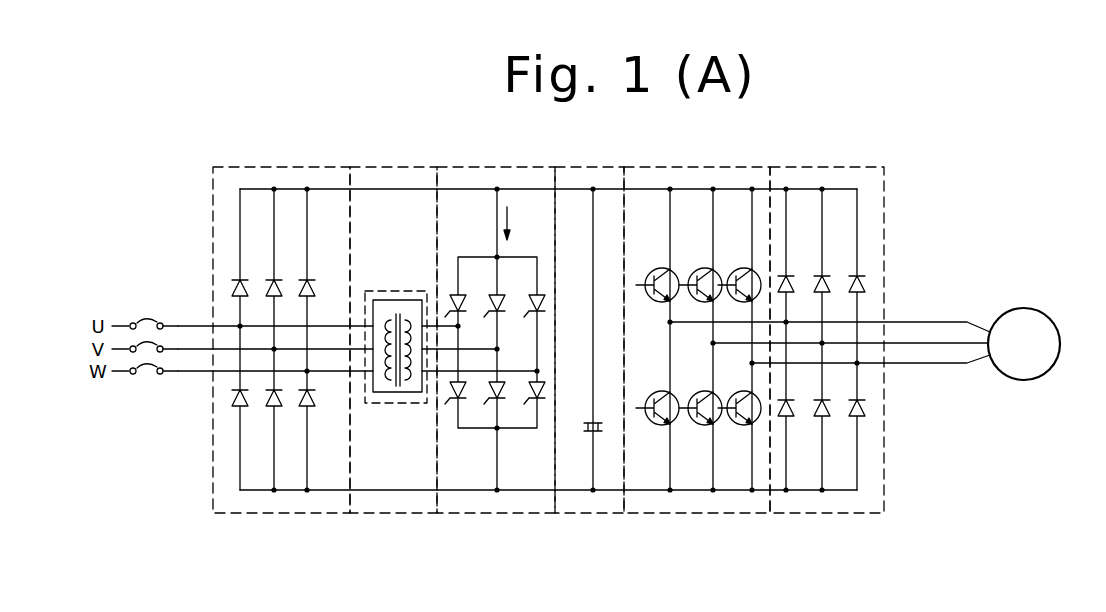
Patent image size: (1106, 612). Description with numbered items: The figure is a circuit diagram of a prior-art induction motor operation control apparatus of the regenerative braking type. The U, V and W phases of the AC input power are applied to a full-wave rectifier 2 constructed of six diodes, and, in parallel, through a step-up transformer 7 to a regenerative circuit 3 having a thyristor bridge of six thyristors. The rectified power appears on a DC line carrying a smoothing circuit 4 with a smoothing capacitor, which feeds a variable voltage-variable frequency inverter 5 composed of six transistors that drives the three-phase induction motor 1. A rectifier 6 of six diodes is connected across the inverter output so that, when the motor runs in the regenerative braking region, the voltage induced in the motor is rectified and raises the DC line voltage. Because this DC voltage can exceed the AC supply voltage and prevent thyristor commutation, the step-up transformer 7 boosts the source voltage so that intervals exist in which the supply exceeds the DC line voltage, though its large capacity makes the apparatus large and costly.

The three-phase induction motor 1 is at (1027, 309).
The full-wave rectifier 2 is at (248, 166).
The regenerative circuit 3 is at (514, 166).
The smoothing circuit 4 is at (597, 166).
The variable voltage-variable frequency inverter 5 is at (686, 166).
The rectifier 6 is at (793, 167).
The step-up transformer 7 is at (384, 291).